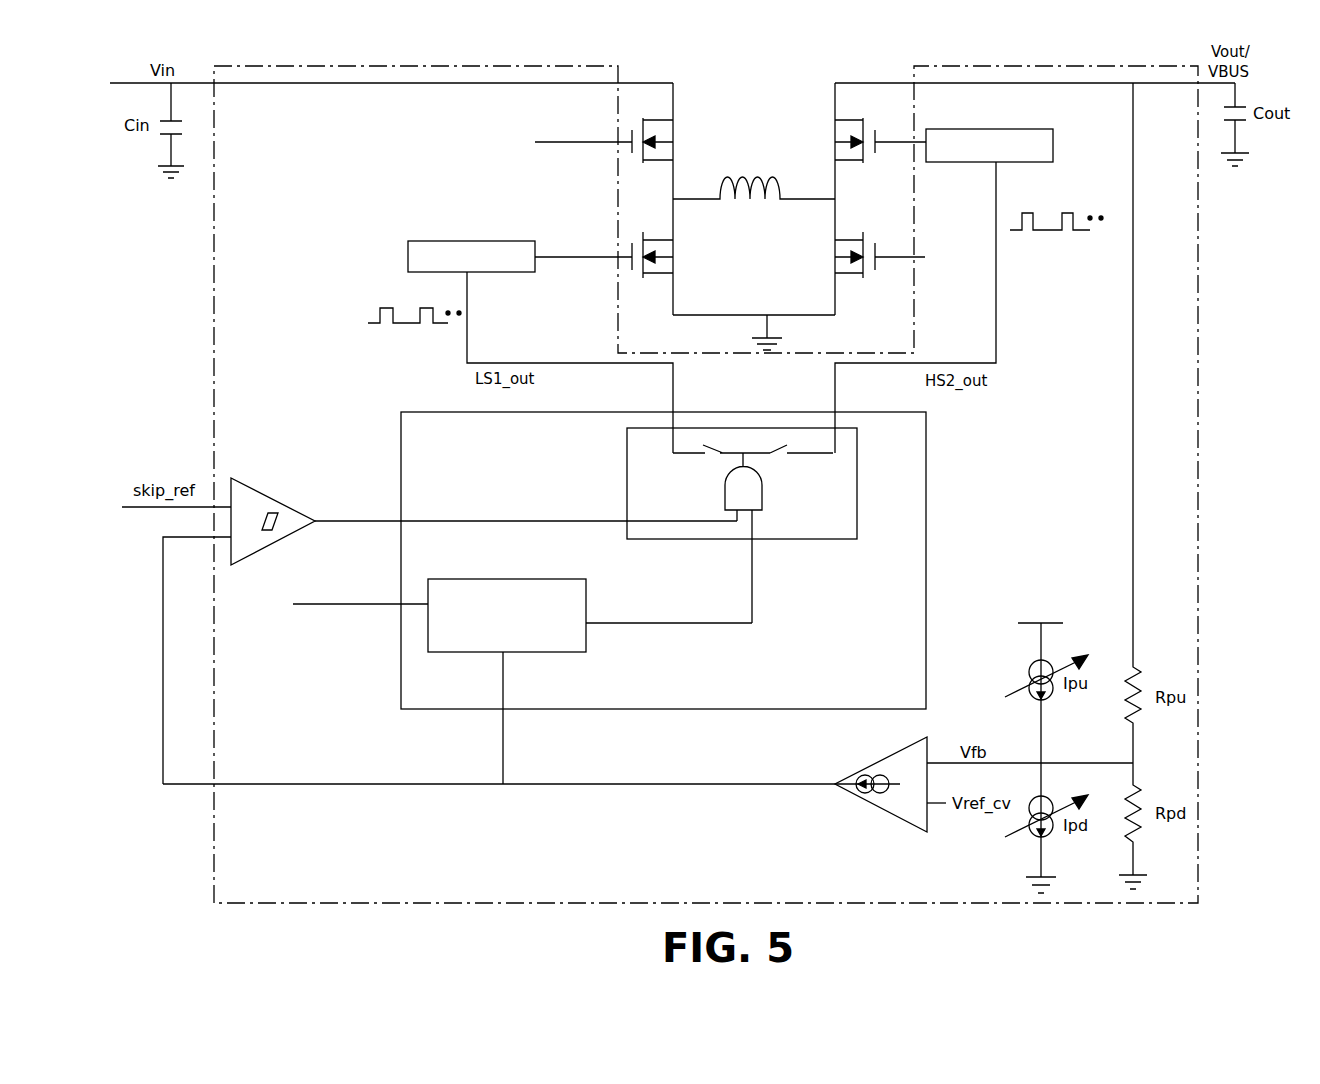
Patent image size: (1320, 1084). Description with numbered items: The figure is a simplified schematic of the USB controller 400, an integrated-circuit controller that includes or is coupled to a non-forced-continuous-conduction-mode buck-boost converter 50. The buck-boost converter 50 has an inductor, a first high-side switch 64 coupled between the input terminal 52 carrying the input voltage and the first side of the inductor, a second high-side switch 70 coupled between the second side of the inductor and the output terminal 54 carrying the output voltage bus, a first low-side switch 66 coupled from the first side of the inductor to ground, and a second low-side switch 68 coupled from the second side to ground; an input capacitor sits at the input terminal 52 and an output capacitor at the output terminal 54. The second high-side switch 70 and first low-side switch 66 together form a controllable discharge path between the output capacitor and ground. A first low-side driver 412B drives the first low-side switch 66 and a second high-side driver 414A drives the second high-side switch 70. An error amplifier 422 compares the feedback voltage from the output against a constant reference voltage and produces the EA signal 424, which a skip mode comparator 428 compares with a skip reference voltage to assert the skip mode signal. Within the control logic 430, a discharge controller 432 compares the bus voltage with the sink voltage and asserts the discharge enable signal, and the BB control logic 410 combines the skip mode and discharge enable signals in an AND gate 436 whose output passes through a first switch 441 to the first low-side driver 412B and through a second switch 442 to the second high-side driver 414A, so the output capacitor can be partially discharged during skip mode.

The USB controller 400 is at (280, 125).
The buck-boost converter 50 is at (776, 124).
The input terminal 52 is at (650, 83).
The output terminal 54 is at (835, 83).
The first high-side switch 64 is at (632, 131).
The first low-side switch 66 is at (632, 243).
The second low-side switch 68 is at (875, 243).
The second high-side switch 70 is at (875, 130).
The first low-side driver 412B is at (408, 251).
The second high-side driver 414A is at (1053, 136).
The BB control logic 410 is at (857, 487).
The first switch 441 is at (700, 449).
The second switch 442 is at (777, 452).
The AND gate 436 is at (725, 492).
The skip mode comparator 428 is at (265, 492).
The discharge controller 432 is at (428, 623).
The control logic 430 is at (738, 697).
The EA signal 424 is at (643, 784).
The error amplifier 422 is at (890, 813).